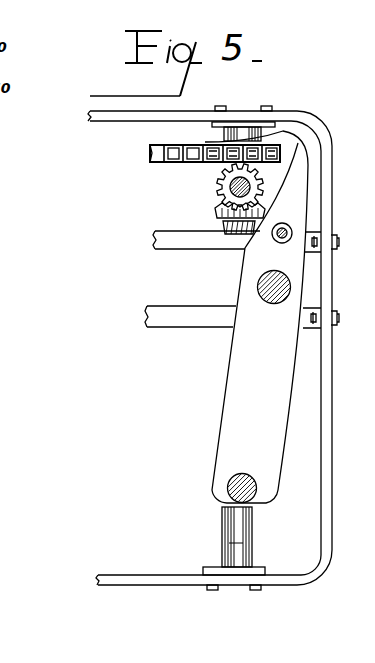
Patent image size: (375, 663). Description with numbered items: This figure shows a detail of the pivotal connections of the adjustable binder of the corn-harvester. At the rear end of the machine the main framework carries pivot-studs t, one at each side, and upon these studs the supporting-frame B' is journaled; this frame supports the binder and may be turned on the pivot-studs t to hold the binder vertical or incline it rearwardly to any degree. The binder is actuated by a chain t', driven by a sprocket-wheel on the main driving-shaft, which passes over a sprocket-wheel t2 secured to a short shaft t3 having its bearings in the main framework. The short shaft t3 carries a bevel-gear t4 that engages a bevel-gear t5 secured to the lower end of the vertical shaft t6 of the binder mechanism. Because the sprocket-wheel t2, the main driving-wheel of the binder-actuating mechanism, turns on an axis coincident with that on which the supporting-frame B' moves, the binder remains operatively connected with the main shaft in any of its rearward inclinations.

The pivot-studs t is at (243, 350).
The chain t' is at (205, 171).
The sprocket-wheel t2 is at (226, 134).
The short shaft t3 is at (203, 171).
The bevel-gear t4 is at (216, 212).
The bevel-gear t5 is at (217, 188).
The vertical shaft t6 is at (258, 192).
The supporting-frame B' is at (235, 317).